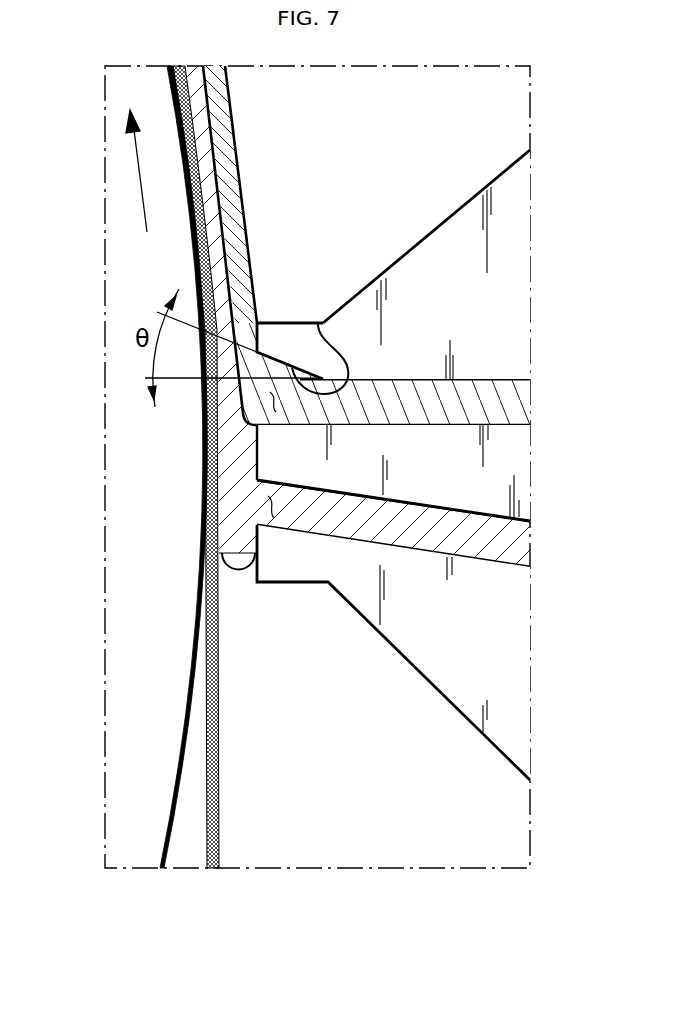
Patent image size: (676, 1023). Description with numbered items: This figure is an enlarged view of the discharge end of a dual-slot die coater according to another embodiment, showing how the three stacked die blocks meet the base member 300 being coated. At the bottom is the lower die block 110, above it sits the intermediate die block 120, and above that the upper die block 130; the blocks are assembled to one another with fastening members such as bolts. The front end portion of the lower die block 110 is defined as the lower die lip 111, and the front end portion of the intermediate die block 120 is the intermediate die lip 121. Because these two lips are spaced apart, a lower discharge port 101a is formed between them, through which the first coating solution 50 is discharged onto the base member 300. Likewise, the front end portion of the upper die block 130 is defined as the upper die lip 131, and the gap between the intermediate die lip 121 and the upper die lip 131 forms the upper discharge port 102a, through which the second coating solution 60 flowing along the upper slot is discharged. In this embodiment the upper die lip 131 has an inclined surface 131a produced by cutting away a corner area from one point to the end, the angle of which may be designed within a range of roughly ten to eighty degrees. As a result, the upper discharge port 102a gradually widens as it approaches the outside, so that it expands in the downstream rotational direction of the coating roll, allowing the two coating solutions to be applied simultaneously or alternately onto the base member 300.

The first coating solution 50 is at (506, 544).
The second coating solution 60 is at (506, 402).
The lower die block 110 is at (506, 640).
The lower die lip 111 is at (275, 555).
The intermediate die block 120 is at (506, 461).
The intermediate die lip 121 is at (277, 452).
The upper die block 130 is at (506, 288).
The upper die lip 131 is at (277, 340).
The inclined surface 131a is at (318, 323).
The lower discharge port 101a is at (270, 505).
The upper discharge port 102a is at (273, 400).
The base member 300 is at (220, 768).